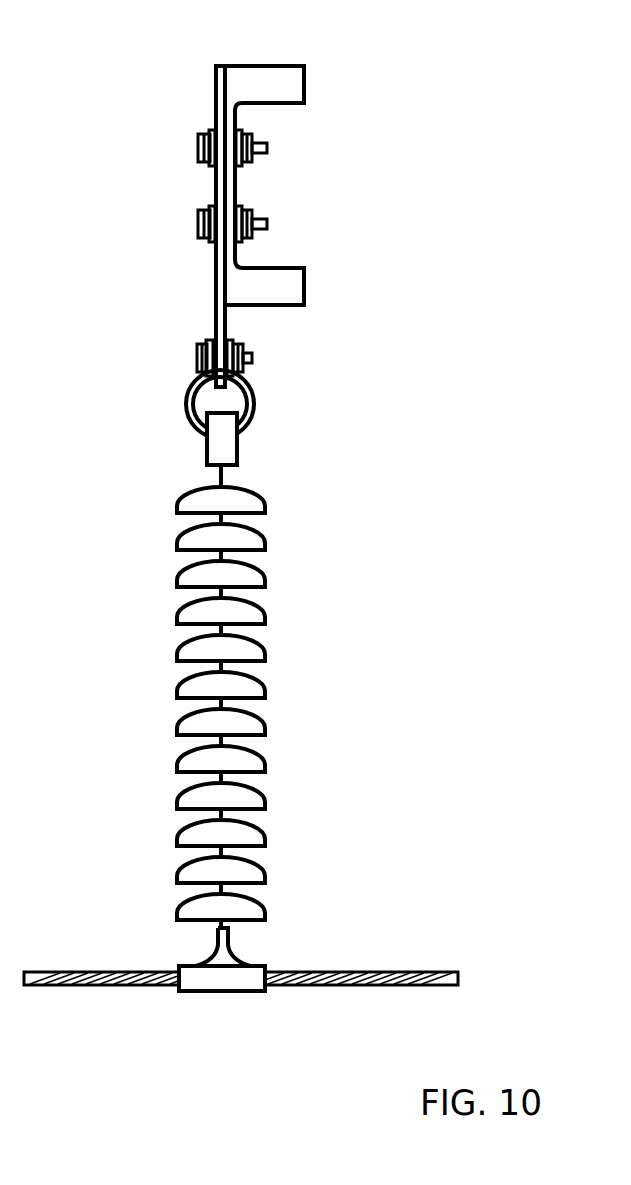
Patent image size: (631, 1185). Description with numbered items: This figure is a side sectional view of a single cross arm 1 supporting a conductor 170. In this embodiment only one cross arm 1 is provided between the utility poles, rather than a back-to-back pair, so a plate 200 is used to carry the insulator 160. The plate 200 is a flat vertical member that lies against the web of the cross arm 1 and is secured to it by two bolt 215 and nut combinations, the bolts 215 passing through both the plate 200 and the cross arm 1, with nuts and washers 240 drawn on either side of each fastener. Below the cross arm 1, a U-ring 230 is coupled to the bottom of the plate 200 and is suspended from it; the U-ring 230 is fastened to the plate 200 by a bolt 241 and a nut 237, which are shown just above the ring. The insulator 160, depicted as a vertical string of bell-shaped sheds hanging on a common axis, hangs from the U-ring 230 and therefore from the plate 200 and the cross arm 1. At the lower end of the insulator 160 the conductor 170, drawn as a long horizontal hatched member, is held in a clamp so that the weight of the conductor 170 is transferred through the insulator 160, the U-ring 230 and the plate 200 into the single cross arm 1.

The cross arm 1 is at (262, 66).
The plate 200 is at (213, 265).
The nuts and washers 240 is at (205, 133).
The bolt 215 is at (265, 145).
The nut 237 is at (197, 349).
The bolt 241 is at (252, 357).
The U-ring 230 is at (255, 400).
The insulator 160 is at (263, 580).
The conductor 170 is at (362, 973).